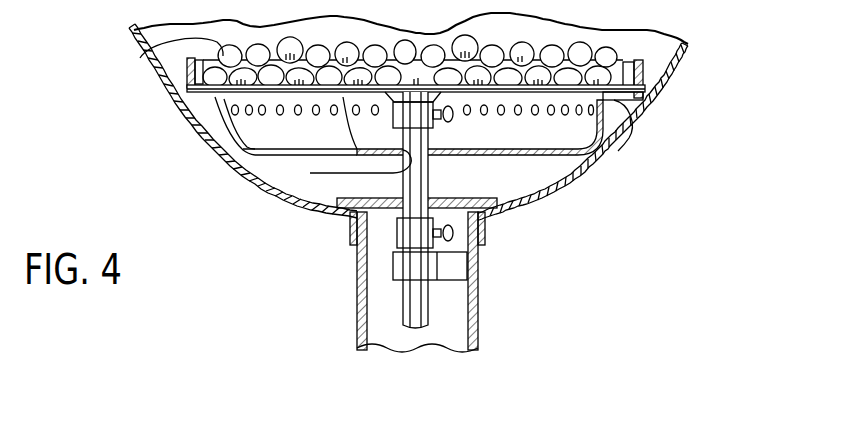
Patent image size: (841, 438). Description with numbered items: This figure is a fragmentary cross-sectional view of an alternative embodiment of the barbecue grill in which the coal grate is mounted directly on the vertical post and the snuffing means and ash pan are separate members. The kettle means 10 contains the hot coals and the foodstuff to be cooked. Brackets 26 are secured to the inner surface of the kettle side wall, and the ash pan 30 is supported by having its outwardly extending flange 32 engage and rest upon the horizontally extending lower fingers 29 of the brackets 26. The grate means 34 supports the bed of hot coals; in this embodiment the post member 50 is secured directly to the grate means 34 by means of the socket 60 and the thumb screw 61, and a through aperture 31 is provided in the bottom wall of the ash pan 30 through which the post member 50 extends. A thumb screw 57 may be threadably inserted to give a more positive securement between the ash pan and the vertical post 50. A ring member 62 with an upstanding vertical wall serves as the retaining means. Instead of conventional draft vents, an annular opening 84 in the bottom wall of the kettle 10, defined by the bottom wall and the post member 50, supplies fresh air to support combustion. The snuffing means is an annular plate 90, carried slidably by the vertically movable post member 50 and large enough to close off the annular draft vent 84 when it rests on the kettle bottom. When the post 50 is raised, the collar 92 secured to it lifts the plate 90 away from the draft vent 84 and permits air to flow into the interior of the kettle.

The kettle means 10 is at (596, 171).
The bracket 26 is at (162, 82).
The lower finger 29 is at (185, 117).
The ash pan 30 is at (540, 158).
The through aperture 31 is at (310, 173).
The outwardly extending flange 32 is at (217, 97).
The grate means 34 is at (141, 58).
The post member 50 is at (427, 305).
The thumb screw 57 is at (462, 268).
The socket 60 is at (415, 97).
The thumb screw 61 is at (452, 120).
The ring member 62 is at (623, 60).
The annular opening 84 is at (405, 233).
The annular plate 90 is at (452, 199).
The collar 92 is at (385, 228).